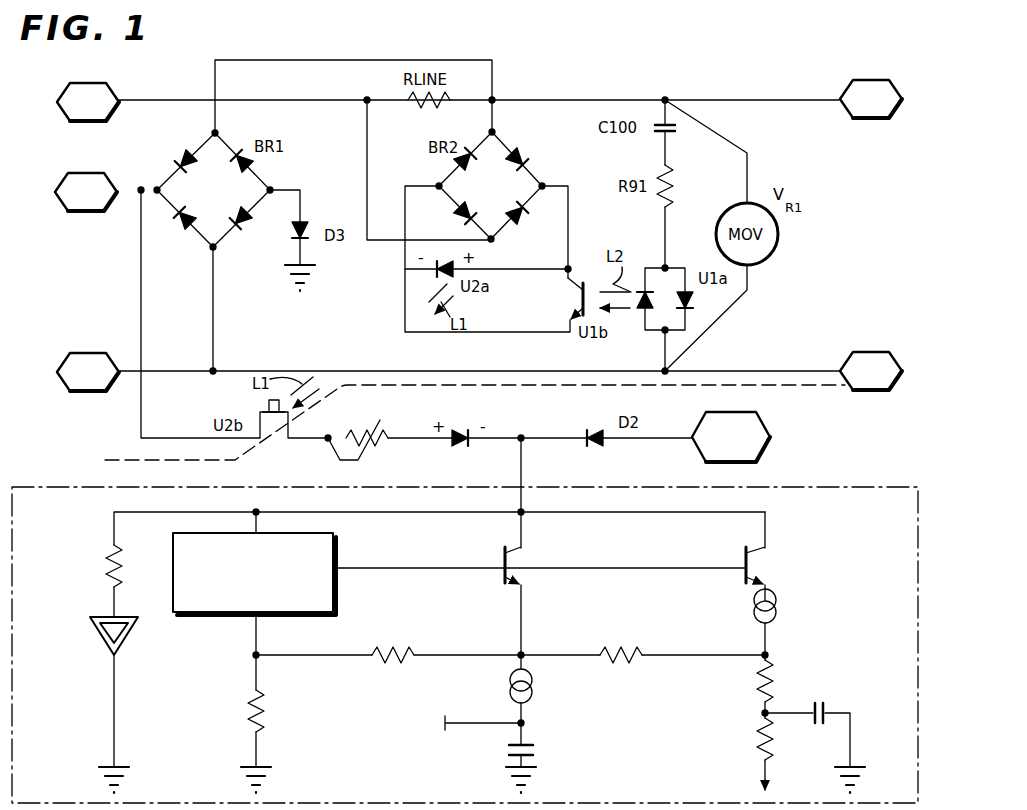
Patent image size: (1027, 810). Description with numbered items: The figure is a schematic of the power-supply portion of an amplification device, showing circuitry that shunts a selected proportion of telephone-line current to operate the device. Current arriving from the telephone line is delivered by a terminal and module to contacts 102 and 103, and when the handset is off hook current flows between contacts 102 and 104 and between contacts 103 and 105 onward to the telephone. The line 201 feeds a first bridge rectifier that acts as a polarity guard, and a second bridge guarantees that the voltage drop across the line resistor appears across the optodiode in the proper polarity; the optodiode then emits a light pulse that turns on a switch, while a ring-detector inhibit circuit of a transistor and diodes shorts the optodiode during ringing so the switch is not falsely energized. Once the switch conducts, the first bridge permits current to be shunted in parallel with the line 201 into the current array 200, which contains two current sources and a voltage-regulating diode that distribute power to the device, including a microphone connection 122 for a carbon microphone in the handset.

The contact 104 is at (124, 71).
The contact 102 is at (880, 80).
The LINE 201 is at (82, 212).
The contact 105 is at (93, 353).
The contact 103 is at (876, 352).
The microphone terminal 122 is at (770, 442).
The current array 200 is at (88, 482).